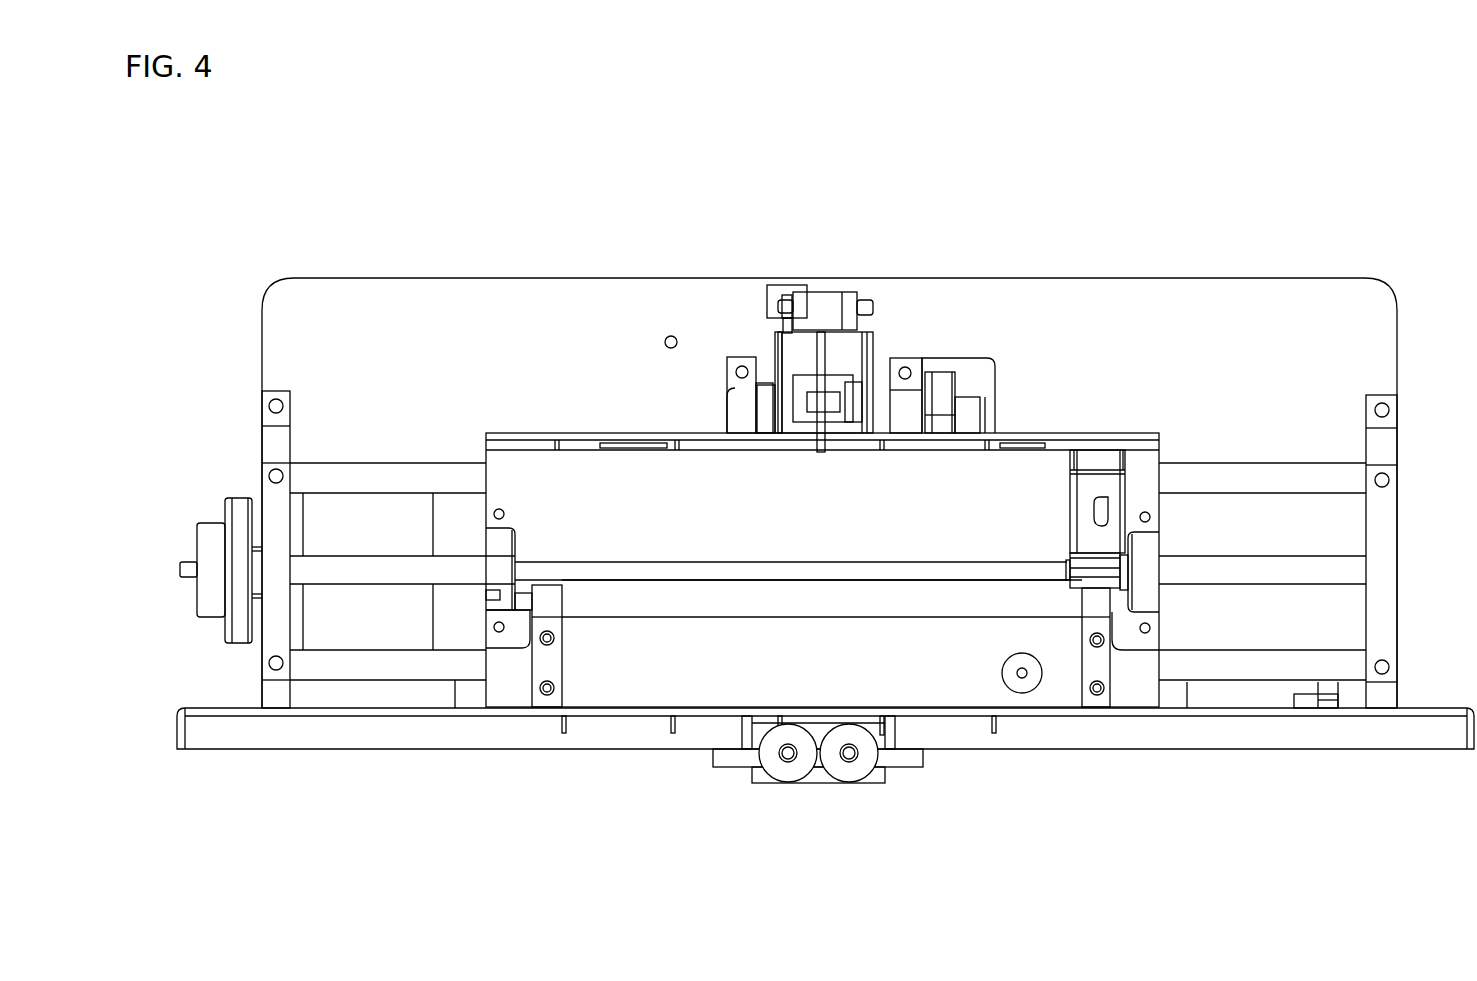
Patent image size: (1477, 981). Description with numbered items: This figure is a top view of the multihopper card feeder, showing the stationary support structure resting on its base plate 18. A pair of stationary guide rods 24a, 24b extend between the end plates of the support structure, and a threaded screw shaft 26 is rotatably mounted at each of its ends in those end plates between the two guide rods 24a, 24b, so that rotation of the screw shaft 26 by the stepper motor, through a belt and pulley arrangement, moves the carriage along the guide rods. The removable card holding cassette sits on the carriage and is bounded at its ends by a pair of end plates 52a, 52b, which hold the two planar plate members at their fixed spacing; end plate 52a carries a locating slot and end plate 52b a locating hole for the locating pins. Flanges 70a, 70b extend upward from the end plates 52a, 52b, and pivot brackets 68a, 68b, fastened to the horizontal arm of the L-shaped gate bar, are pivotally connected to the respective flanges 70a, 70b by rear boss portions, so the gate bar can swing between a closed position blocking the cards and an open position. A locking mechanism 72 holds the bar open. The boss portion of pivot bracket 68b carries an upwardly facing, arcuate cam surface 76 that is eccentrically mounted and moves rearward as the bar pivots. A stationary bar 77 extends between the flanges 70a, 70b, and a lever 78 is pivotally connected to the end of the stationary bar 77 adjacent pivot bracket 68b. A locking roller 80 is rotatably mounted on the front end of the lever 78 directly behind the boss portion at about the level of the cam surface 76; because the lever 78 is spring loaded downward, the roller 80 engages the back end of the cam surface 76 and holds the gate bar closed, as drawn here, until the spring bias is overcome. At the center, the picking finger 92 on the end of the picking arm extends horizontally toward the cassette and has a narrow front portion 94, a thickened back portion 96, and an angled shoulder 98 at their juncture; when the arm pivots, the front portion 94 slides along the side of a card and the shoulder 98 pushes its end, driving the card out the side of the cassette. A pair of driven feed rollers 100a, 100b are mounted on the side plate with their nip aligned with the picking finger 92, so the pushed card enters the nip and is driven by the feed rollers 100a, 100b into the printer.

The base plate 18 is at (530, 298).
The stationary guide rod 24a is at (372, 470).
The stationary guide rod 24b is at (377, 660).
The threaded screw shaft 26 is at (376, 570).
The end plate 52a is at (270, 488).
The end plate 52b is at (1387, 540).
The pivot bracket 68a is at (548, 664).
The pivot bracket 68b is at (1100, 664).
The flange 70a is at (498, 572).
The flange 70b is at (1150, 575).
The locking mechanism 72 is at (1140, 422).
The arcuate cam surface 76 is at (1088, 605).
The stationary bar 77 is at (752, 572).
The lever 78 is at (1073, 512).
The locking roller 80 is at (1088, 560).
The picking finger 92 is at (820, 398).
The narrow front portion 94 is at (821, 427).
The thickened back portion 96 is at (823, 381).
The angled shoulder 98 is at (830, 430).
The driven feed roller 100a is at (772, 783).
The driven feed roller 100b is at (867, 783).